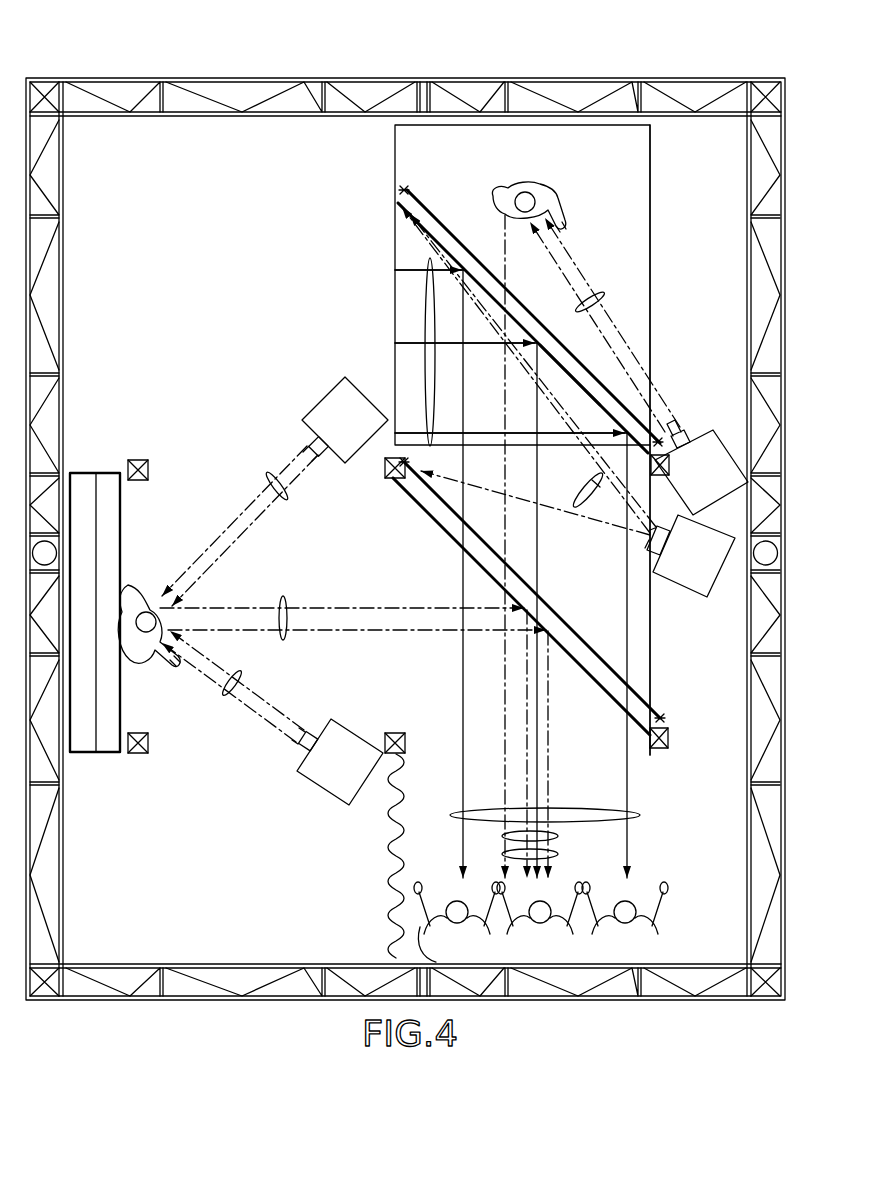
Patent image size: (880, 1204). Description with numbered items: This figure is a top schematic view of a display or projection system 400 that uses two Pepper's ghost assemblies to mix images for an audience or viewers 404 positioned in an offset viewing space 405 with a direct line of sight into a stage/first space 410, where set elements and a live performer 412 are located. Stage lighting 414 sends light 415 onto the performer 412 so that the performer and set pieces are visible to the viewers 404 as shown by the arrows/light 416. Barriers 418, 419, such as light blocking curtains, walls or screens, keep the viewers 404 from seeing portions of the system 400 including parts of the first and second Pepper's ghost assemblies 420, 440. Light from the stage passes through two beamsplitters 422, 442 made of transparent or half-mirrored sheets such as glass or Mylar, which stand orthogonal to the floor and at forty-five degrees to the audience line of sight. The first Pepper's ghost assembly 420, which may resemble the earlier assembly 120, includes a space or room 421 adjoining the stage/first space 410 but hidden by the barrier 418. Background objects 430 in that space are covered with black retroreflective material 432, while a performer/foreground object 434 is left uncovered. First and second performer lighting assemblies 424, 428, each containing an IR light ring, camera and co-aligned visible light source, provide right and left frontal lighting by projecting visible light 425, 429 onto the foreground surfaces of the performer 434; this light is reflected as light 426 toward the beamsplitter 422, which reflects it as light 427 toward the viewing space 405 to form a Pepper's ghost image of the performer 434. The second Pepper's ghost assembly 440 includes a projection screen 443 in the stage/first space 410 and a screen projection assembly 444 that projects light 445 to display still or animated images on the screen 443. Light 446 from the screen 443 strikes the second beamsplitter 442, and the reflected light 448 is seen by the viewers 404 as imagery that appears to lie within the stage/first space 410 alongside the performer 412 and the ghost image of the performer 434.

The display or projection system 400 is at (68, 62).
The stage/first space 410 is at (630, 155).
The performer 412 is at (545, 186).
The stage lighting 414 is at (705, 440).
The light 415 is at (600, 290).
The arrows/light 416 is at (562, 856).
The barrier 418 is at (401, 860).
The barrier 419 is at (651, 258).
The first Pepper's ghost assembly 420 is at (193, 500).
The space or room 421 is at (220, 841).
The beamsplitter 422 is at (441, 526).
The first performer lighting assembly 424 is at (365, 719).
The visible light 425 is at (226, 700).
The reflected light 426 is at (287, 596).
The arrows/light 427 is at (560, 837).
The second performer lighting assembly 428 is at (330, 402).
The visible light 429 is at (288, 492).
The background object 430 is at (84, 472).
The black retroreflective material 432 is at (109, 472).
The performer/foreground object 434 is at (152, 590).
The second Pepper's ghost assembly 440 is at (727, 582).
The second beamsplitter 442 is at (567, 372).
The projection screen 443 is at (395, 248).
The screen projection assembly 444 is at (694, 581).
The projected light 445 is at (578, 492).
The light from the screen 446 is at (437, 384).
The reflected light 448 is at (640, 817).
The audience or viewers 404 is at (541, 922).
The viewing space 405 is at (710, 915).
The assembly 120 is at (583, 690).